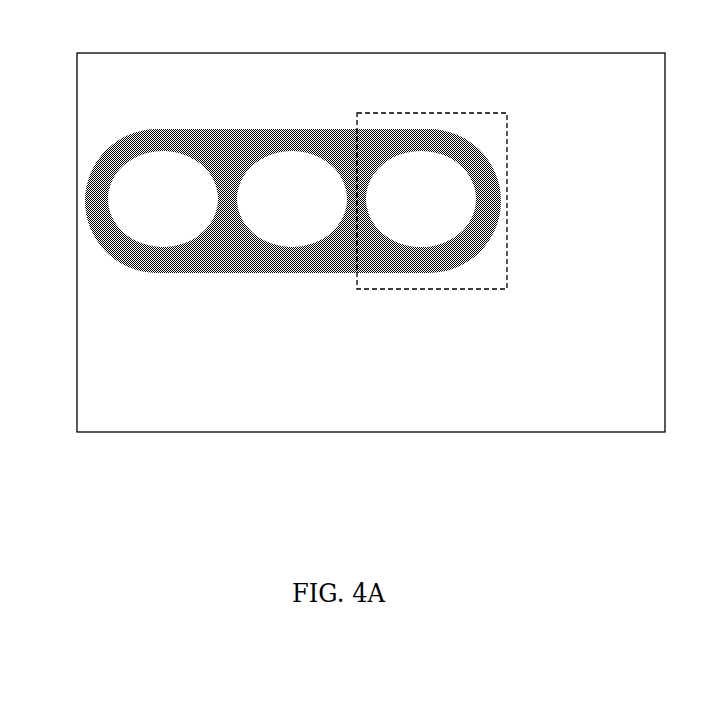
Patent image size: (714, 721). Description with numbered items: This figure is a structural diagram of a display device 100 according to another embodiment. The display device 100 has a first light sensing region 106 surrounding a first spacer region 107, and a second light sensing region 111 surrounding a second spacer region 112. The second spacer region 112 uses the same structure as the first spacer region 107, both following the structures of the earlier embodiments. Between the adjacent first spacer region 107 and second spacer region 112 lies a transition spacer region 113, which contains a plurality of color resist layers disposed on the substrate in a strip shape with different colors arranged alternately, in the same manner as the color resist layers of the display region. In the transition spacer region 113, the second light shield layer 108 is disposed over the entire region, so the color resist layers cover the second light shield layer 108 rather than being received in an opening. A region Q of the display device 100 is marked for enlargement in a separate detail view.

The display device 100 is at (70, 54).
The first light sensing region 106 is at (421, 199).
The first spacer region 107 is at (432, 143).
The second light shield layer 108 is at (320, 261).
The second light sensing region 111 is at (292, 199).
The second spacer region 112 is at (297, 133).
The transition spacer region 113 is at (347, 125).
The region Q is at (449, 112).